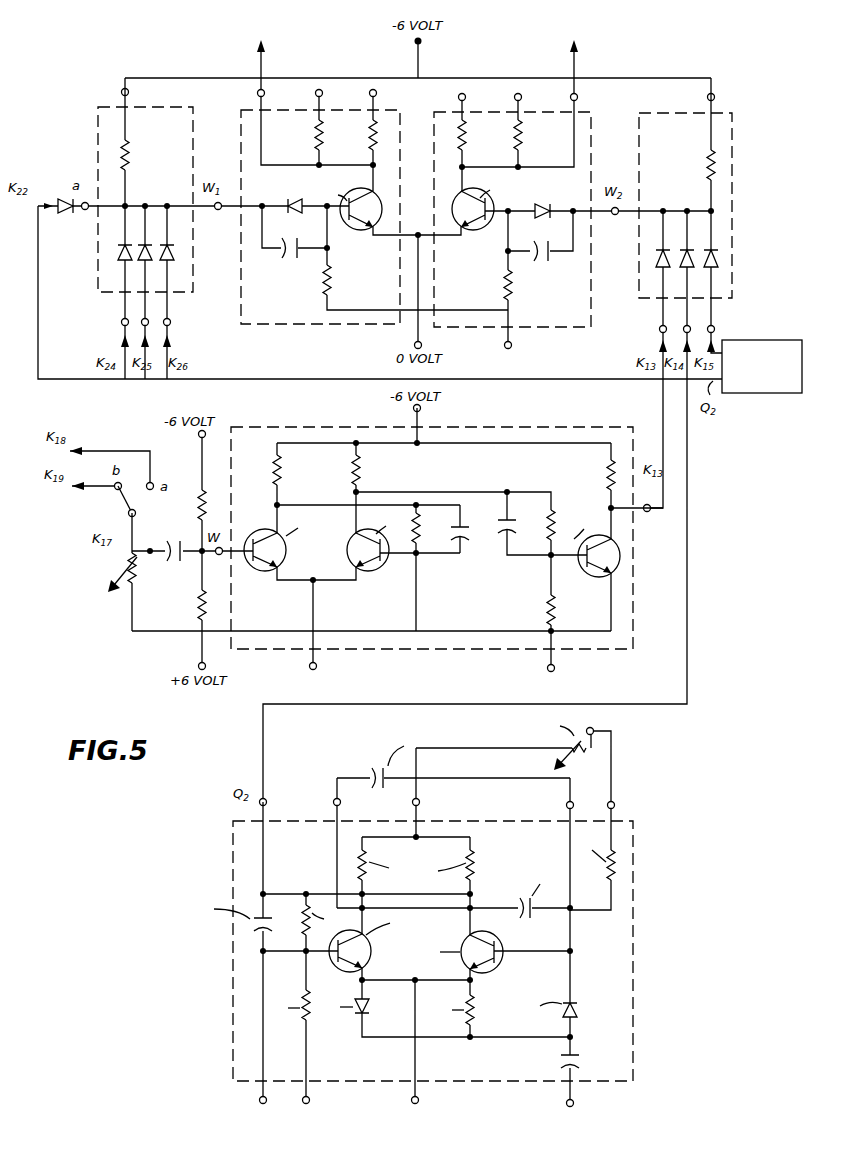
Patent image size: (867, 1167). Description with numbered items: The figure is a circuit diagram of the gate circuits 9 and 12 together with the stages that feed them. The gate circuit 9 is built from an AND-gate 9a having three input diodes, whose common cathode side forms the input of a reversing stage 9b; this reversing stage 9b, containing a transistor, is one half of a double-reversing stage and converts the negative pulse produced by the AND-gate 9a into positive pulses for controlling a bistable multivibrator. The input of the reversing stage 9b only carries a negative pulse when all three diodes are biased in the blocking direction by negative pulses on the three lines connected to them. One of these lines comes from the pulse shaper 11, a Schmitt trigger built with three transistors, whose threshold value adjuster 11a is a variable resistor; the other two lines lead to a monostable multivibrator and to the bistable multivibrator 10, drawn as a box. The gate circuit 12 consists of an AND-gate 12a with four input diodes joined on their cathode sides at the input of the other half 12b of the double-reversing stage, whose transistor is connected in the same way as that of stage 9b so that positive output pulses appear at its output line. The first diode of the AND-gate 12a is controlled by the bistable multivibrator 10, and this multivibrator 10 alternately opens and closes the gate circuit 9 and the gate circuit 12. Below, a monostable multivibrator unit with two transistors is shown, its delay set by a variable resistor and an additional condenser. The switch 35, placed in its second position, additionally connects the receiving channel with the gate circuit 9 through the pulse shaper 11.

The gate circuit 9 is at (619, 109).
The AND-gate 9a is at (735, 118).
The reversing stage 9b is at (587, 327).
The bistable multivibrator 10 is at (758, 341).
The pulse shaper 11 is at (550, 430).
The threshold value adjuster 11a is at (136, 583).
The gate circuit 12 is at (217, 108).
The AND-gate 12a is at (98, 114).
The reversing stage 12b is at (297, 324).
The switch 35 is at (120, 497).